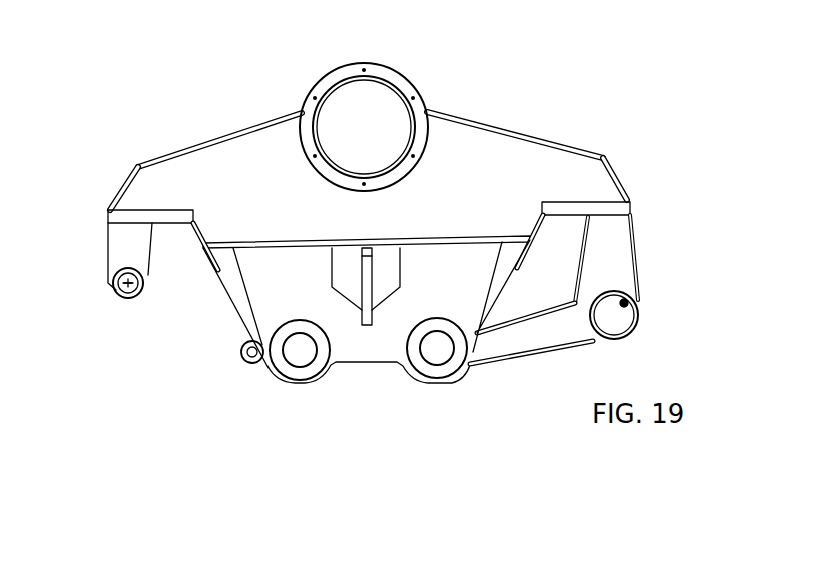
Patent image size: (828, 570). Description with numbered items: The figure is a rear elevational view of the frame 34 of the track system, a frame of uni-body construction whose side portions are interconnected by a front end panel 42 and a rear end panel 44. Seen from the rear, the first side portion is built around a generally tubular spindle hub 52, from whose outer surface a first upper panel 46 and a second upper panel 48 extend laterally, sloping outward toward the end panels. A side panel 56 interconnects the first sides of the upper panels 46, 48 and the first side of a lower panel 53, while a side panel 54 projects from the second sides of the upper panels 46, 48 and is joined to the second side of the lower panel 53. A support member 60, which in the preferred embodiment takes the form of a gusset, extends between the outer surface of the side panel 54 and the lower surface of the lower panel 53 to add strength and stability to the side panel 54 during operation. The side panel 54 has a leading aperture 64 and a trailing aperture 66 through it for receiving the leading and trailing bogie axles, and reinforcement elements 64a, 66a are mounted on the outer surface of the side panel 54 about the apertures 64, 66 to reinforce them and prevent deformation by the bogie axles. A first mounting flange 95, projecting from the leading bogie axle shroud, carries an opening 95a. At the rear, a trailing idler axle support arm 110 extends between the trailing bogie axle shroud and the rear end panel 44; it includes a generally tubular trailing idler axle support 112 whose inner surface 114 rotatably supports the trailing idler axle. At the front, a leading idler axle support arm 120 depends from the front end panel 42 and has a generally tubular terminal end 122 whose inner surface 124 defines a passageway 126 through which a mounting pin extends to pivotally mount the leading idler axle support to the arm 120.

The frame 34 is at (122, 88).
The front end panel 42 is at (112, 192).
The rear end panel 44 is at (612, 170).
The first upper panel 46 is at (470, 106).
The second upper panel 48 is at (242, 126).
The spindle hub 52 is at (384, 76).
The lower panel 53 is at (268, 243).
The side panel 54 is at (365, 355).
The side panel 56 is at (459, 173).
The support member 60 is at (370, 265).
The leading aperture 64 is at (298, 342).
The reinforcement element 64a is at (272, 365).
The trailing aperture 66 is at (437, 340).
The reinforcement element 66a is at (452, 362).
The first mounting flange 95 is at (246, 346).
The opening 95a is at (246, 352).
The trailing idler axle support arm 110 is at (632, 230).
The trailing idler axle support 112 is at (628, 337).
The inner surface 114 is at (636, 308).
The leading idler axle support arm 120 is at (107, 238).
The terminal end 122 is at (112, 290).
The inner surface 124 is at (128, 296).
The passageway 126 is at (142, 290).